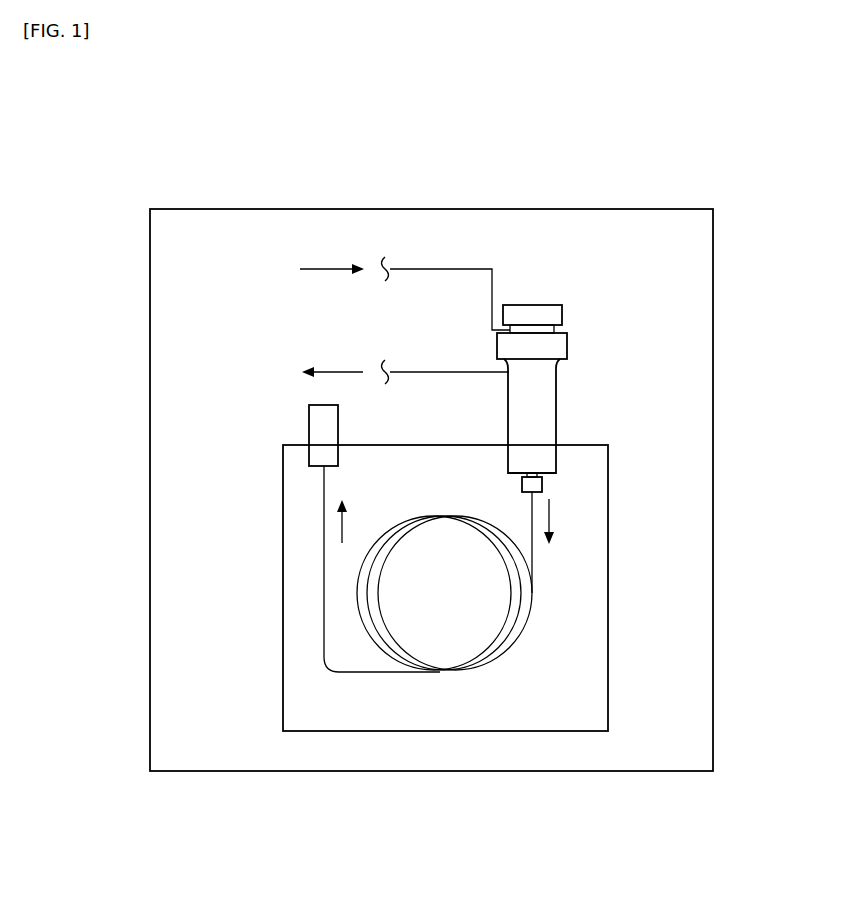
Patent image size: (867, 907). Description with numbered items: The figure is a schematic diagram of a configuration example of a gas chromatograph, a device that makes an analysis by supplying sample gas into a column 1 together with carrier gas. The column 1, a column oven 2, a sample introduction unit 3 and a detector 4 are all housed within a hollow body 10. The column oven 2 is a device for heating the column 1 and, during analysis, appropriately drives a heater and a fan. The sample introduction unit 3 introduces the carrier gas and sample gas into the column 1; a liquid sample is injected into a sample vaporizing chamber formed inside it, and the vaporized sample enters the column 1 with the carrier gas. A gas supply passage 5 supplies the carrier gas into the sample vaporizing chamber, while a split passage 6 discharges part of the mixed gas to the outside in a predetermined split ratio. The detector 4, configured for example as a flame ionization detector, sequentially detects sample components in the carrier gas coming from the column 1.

The column 1 is at (507, 648).
The column oven 2 is at (283, 633).
The sample introduction unit 3 is at (556, 405).
The detector 4 is at (308, 423).
The gas supply passage 5 is at (431, 268).
The split passage 6 is at (431, 371).
The hollow body 10 is at (713, 340).